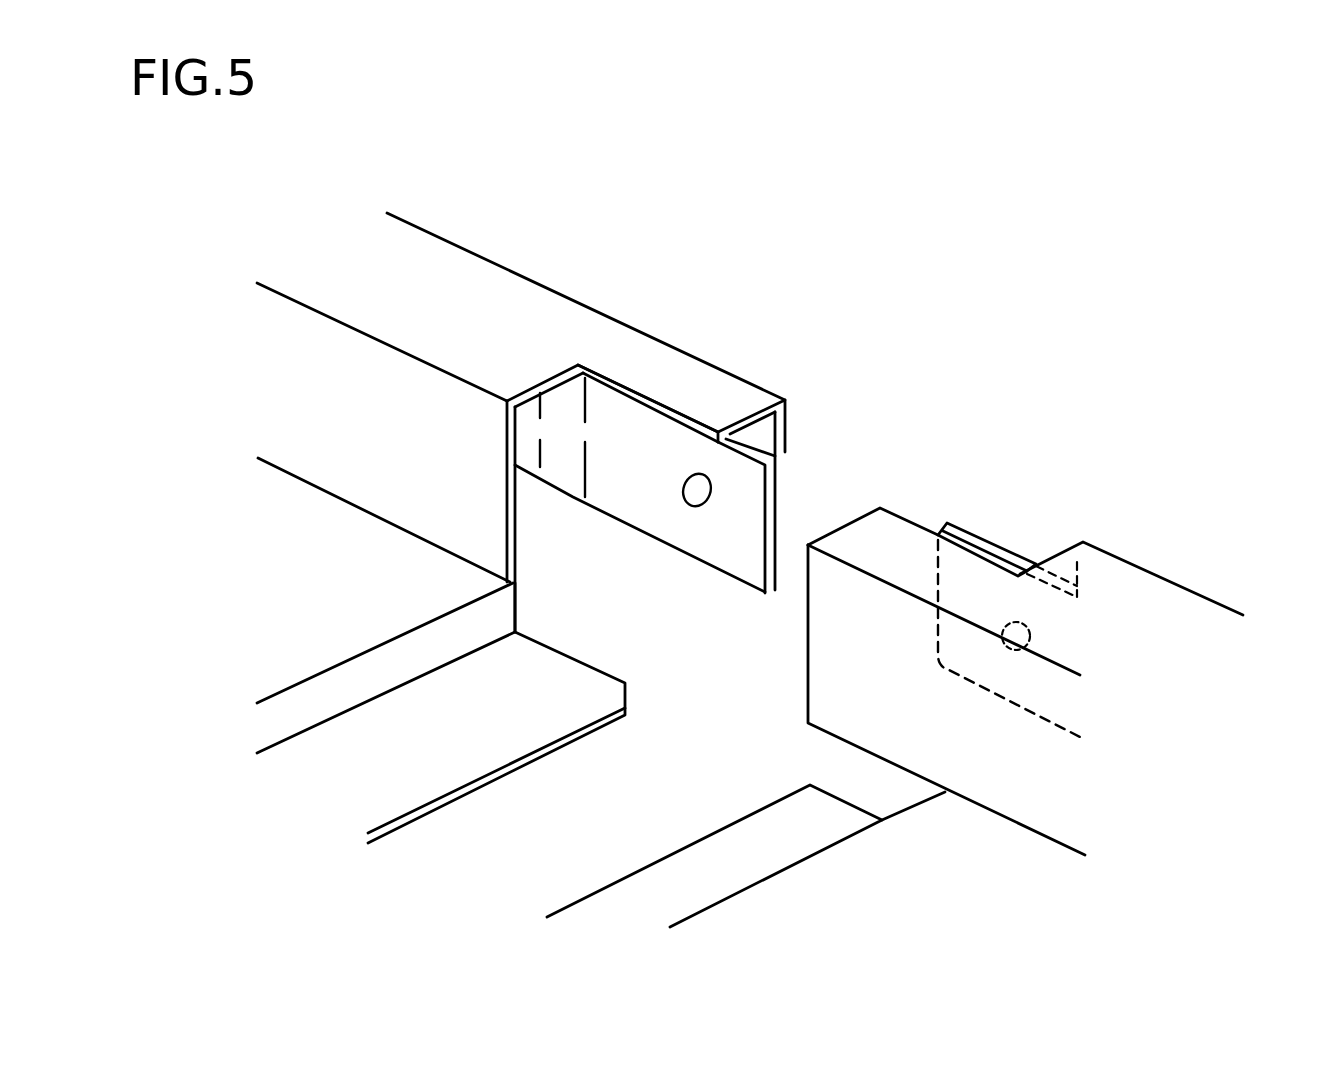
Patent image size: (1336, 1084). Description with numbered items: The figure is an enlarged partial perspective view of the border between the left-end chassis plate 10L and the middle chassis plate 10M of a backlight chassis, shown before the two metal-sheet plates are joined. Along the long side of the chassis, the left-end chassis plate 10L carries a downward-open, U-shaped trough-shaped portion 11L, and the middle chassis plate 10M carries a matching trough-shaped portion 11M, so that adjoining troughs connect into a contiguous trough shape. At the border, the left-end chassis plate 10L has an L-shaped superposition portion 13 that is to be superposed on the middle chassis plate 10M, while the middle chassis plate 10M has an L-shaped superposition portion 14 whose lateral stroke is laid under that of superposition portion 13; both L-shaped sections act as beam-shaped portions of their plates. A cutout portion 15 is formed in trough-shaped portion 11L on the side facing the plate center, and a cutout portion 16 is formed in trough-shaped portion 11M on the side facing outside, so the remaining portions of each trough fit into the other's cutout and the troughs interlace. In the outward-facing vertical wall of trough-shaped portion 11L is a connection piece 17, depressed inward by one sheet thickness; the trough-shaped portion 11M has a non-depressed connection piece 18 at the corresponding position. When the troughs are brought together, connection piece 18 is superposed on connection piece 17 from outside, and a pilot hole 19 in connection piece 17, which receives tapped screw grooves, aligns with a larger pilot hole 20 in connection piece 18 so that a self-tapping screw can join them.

The left-end chassis plate 10L is at (376, 599).
The middle chassis plate 10M is at (976, 895).
The trough-shaped portion 11L is at (522, 328).
The trough-shaped portion 11M is at (1126, 613).
The superposition portion 13 is at (558, 683).
The superposition portion 14 is at (728, 858).
The cutout portion 15 is at (657, 405).
The cutout portion 16 is at (923, 528).
The connection piece 17 is at (701, 440).
The connection piece 18 is at (996, 546).
The pilot hole 19 is at (692, 488).
The pilot hole 20 is at (1006, 652).